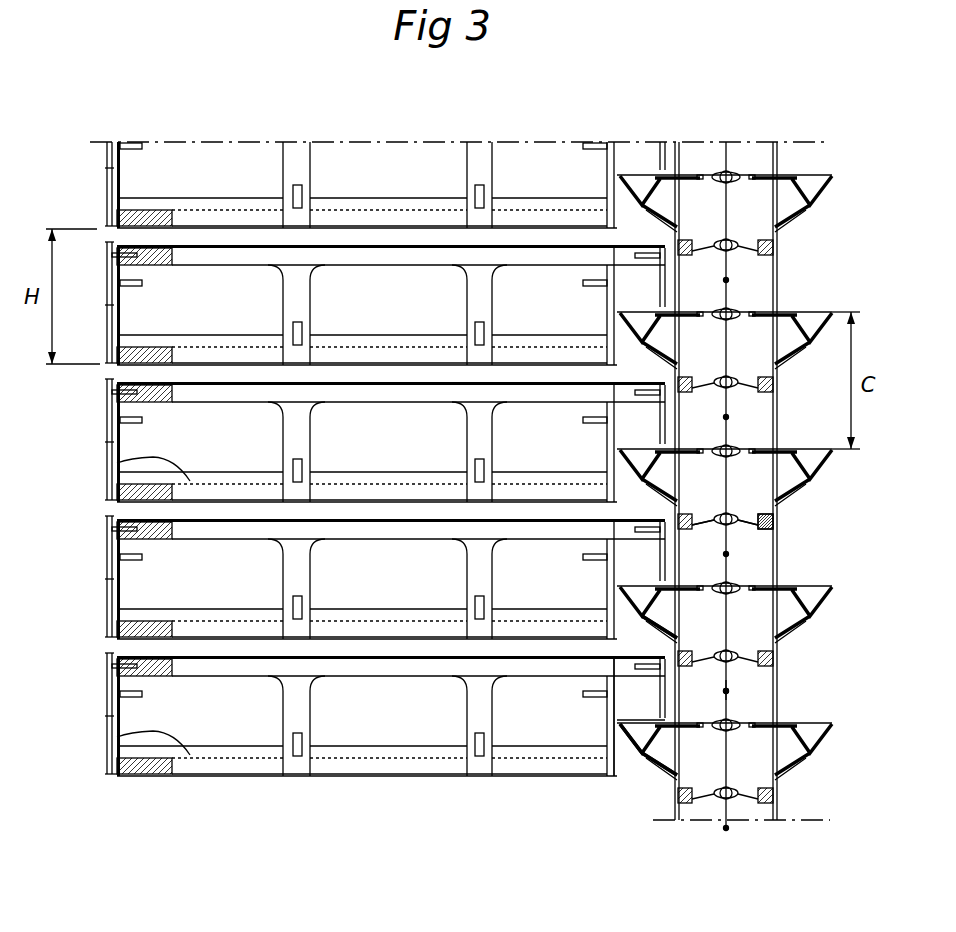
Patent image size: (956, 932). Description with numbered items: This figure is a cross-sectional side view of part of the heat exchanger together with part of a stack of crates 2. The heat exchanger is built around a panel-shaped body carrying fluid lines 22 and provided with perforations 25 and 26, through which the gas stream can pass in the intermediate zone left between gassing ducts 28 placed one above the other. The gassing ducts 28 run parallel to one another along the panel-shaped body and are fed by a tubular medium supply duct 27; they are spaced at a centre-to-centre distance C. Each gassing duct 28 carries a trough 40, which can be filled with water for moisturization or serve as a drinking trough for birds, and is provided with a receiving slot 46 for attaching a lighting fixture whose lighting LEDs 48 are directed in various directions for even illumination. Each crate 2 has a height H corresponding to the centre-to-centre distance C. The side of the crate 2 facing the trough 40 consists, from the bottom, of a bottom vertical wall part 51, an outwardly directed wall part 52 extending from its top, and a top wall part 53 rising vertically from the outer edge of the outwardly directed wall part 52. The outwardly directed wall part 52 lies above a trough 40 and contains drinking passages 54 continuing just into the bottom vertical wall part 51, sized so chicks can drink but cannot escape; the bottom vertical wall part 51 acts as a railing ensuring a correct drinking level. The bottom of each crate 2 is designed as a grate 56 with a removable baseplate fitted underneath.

The crate 2 is at (98, 205).
The fluid line 22 is at (728, 252).
The perforation 25 is at (732, 679).
The perforation 26 is at (660, 607).
The medium supply duct 27 is at (756, 148).
The gassing duct 28 is at (766, 596).
The trough 40 is at (762, 600).
The receiving slot 46 is at (758, 535).
The lighting LED 48 is at (772, 521).
The bottom vertical wall part 51 is at (617, 743).
The outwardly directed wall part 52 is at (630, 750).
The top wall part 53 is at (660, 750).
The drinking passage 54 is at (627, 712).
The grate 56 is at (117, 463).